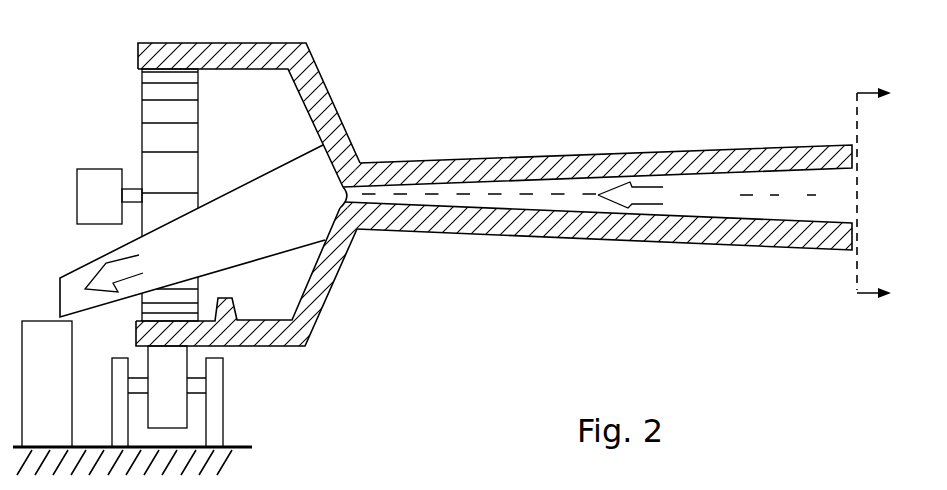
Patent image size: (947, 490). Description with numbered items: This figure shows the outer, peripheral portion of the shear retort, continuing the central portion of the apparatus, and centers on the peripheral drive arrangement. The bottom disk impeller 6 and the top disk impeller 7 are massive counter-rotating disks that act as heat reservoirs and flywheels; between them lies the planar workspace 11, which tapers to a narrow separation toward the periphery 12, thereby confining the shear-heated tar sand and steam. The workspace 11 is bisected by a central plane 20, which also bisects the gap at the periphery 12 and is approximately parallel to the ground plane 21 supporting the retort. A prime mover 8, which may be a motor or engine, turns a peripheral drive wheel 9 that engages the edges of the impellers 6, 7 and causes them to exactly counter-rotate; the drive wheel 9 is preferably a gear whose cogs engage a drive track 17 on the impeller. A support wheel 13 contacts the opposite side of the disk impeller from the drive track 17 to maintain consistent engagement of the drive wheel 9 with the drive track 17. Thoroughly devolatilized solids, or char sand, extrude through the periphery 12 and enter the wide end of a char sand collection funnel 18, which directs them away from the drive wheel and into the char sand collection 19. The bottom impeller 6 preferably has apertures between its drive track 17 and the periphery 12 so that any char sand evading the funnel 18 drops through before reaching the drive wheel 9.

The bottom disk impeller 6 is at (552, 240).
The top disk impeller 7 is at (552, 154).
The prime mover 8 is at (109, 196).
The peripheral drive wheel 9 is at (150, 135).
The workspace between the impellers 11 is at (589, 195).
The periphery of the workspace 12 is at (328, 195).
The support wheel 13 is at (167, 396).
The drive track 17 is at (156, 67).
The char sand collection funnel 18 is at (277, 176).
The char sand collection 19 is at (47, 384).
The central plane of workspace 20 is at (830, 197).
The ground plane 21 is at (235, 447).